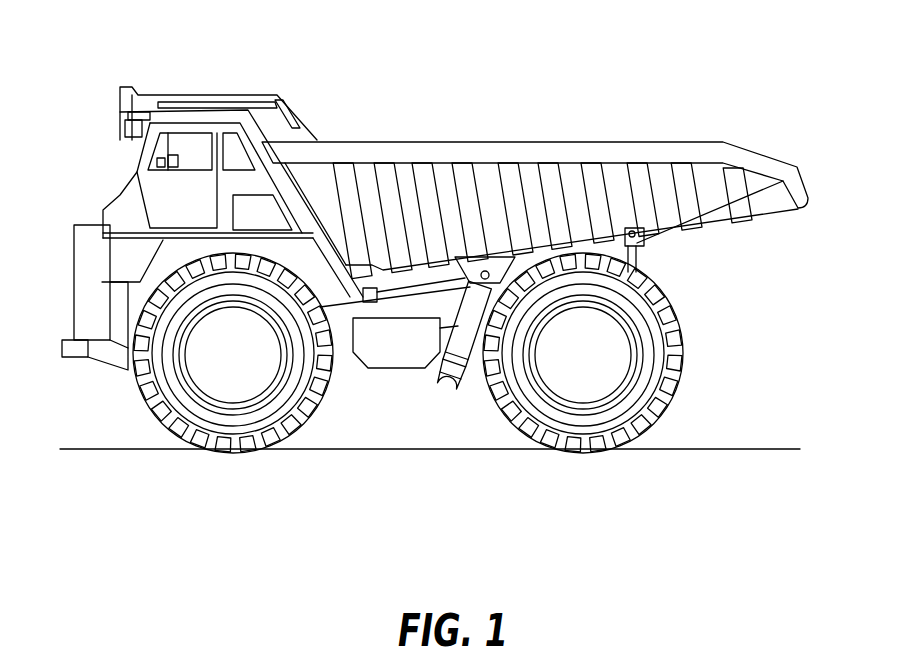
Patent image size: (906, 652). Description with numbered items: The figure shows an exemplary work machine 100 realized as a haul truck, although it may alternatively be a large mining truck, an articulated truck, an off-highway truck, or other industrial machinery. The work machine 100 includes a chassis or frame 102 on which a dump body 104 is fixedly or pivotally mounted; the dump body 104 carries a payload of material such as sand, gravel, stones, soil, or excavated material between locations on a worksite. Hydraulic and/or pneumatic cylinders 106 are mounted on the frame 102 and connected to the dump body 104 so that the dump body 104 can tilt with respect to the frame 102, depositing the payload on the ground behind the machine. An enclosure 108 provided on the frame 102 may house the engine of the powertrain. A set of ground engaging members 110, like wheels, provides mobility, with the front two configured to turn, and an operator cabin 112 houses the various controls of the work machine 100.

The work machine 100 is at (647, 30).
The frame 102 is at (348, 341).
The dump body 104 is at (655, 142).
The hydraulic and/or pneumatic cylinders 106 is at (474, 395).
The enclosure 108 is at (74, 284).
The ground engaging members 110 is at (215, 369).
The operator cabin 112 is at (136, 173).